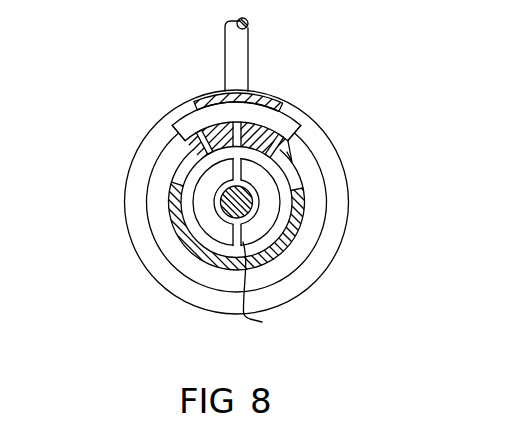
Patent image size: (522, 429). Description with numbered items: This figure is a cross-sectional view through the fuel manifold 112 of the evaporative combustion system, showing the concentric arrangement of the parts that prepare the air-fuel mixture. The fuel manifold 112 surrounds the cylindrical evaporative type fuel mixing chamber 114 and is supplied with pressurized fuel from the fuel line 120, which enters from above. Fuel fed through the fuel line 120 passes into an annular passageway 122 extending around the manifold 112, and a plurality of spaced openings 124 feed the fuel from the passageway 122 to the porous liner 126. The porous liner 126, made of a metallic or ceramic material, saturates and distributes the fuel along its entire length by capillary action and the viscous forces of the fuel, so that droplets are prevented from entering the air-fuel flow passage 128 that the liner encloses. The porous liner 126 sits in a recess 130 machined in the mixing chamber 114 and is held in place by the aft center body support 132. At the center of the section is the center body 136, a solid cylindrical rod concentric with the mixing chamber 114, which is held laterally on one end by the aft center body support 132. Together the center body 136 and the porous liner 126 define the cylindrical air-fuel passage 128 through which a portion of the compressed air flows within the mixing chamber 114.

The fuel manifold 112 is at (345, 242).
The evaporative type fuel mixing chamber 114 is at (299, 270).
The fuel line 120 is at (249, 37).
The annular passageway 122 is at (265, 108).
The spaced openings 124 is at (300, 128).
The porous liner 126 is at (282, 181).
The air-fuel flow passage 128 is at (270, 200).
The recess 130 is at (180, 223).
The aft center body support 132 is at (269, 289).
The center body 136 is at (218, 198).